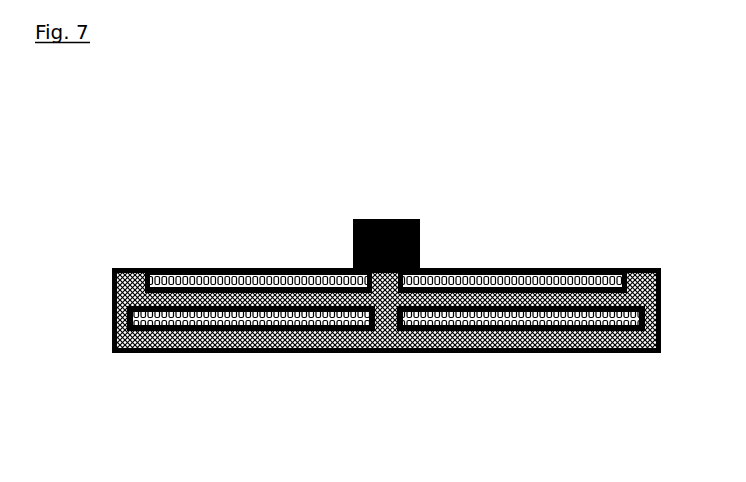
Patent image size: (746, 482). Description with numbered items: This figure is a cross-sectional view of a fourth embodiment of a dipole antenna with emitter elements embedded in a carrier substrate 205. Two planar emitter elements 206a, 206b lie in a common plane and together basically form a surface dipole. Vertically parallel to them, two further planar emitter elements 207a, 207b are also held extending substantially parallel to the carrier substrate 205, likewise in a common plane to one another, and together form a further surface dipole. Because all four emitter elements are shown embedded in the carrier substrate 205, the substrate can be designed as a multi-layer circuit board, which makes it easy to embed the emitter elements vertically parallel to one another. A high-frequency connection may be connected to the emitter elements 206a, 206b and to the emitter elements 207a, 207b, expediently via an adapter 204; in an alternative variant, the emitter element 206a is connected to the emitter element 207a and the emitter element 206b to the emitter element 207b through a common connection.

The adapter 204 is at (377, 219).
The carrier substrate 205 is at (387, 322).
The planar emitter element 206a is at (270, 268).
The planar emitter element 206b is at (486, 268).
The further planar emitter element 207a is at (222, 327).
The further planar emitter element 207b is at (520, 325).